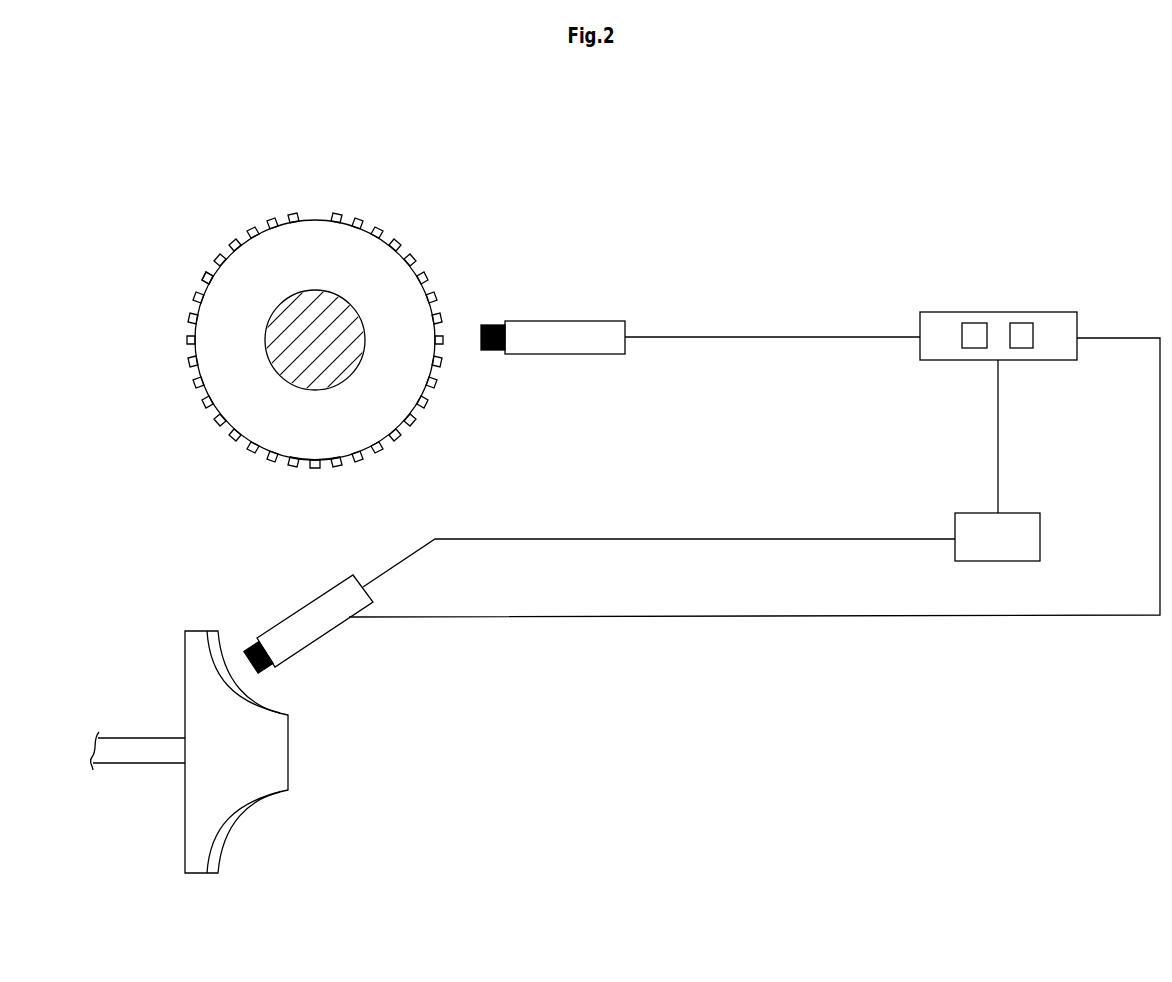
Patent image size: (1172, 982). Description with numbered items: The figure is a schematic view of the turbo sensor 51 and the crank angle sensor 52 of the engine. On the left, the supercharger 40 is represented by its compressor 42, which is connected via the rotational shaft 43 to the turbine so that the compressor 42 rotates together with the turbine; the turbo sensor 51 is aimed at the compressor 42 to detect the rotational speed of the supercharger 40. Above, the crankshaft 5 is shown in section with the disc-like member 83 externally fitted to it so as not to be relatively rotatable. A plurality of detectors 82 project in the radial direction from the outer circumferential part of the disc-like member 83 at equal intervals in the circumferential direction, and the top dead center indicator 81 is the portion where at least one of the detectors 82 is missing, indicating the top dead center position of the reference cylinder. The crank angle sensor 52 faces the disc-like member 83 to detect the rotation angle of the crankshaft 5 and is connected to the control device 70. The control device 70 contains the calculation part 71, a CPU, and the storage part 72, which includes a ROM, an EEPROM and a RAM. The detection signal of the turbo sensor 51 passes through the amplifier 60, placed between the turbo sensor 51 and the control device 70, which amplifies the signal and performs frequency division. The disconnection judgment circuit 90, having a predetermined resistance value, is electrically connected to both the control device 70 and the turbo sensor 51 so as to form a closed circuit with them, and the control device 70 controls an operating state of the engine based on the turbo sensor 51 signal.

The crankshaft 5 is at (268, 360).
The supercharger 40 is at (112, 674).
The compressor 42 is at (270, 792).
The rotational shaft 43 is at (130, 765).
The turbo sensor 51 is at (319, 636).
The crank angle sensor 52 is at (578, 320).
The amplifier 60 is at (1040, 530).
The control device 70 is at (1040, 312).
The calculation part (CPU) 71 is at (973, 348).
The storage part 72 is at (1020, 348).
The top dead center indicator 81 is at (312, 219).
The detectors 82 is at (204, 277).
The disc-like member 83 is at (300, 447).
The disconnection judgment circuit 90 is at (959, 621).